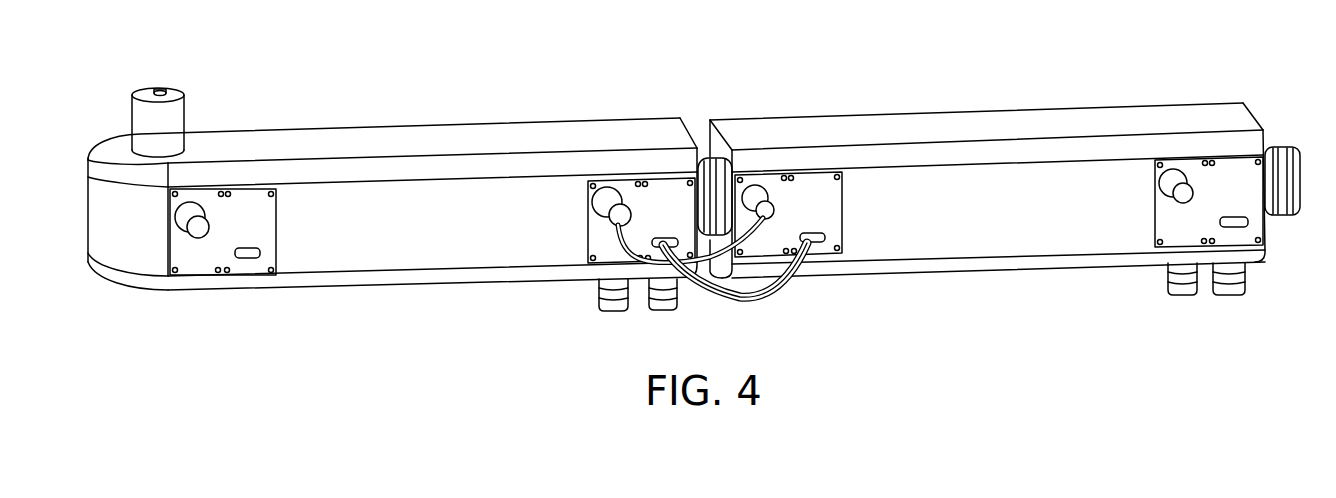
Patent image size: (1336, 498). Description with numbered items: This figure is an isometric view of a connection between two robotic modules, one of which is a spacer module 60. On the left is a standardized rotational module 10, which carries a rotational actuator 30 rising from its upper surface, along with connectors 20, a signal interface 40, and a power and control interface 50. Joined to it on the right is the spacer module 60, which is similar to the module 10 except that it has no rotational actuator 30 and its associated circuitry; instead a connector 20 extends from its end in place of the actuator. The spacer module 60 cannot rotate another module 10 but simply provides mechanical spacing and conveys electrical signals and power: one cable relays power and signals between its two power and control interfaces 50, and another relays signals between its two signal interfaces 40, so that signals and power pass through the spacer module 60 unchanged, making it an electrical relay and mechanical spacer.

The module 10 is at (343, 125).
The connector 20 is at (707, 157).
The rotational actuator 30 is at (177, 92).
The signal interface 40 is at (663, 237).
The power and control interface 50 is at (610, 195).
The spacer module 60 is at (942, 128).